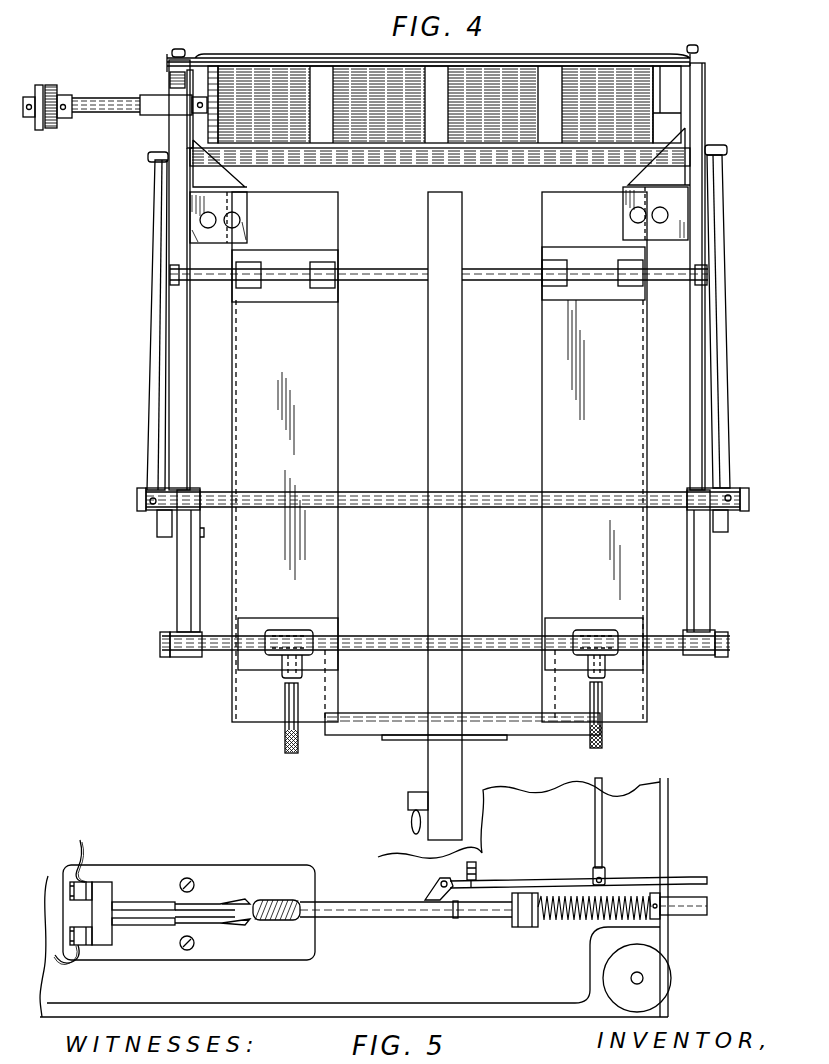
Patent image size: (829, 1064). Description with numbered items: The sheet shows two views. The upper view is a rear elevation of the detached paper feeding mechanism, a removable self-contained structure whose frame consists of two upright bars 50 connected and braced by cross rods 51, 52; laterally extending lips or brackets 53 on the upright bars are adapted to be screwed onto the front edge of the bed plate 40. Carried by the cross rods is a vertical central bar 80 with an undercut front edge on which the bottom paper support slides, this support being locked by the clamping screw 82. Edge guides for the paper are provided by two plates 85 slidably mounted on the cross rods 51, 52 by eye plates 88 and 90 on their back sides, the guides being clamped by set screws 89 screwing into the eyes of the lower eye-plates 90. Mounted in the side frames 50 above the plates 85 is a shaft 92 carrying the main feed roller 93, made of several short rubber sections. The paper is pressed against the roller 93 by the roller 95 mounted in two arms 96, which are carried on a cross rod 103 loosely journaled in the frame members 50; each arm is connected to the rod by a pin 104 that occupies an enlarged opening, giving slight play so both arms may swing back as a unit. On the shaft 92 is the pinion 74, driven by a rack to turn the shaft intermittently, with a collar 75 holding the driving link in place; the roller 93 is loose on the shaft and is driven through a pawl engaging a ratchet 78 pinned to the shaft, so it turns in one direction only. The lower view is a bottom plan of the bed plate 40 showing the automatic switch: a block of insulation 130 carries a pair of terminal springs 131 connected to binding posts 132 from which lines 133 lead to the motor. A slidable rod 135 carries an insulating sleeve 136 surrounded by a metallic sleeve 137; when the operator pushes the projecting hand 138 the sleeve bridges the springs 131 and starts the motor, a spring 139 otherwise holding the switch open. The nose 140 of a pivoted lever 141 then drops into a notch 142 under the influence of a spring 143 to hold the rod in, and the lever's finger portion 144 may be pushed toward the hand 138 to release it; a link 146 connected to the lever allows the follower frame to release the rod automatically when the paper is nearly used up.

In FIG. 5, the bed plate 40 is at (355, 897).
In FIG. 4, the upright bars 50 is at (197, 405).
In FIG. 4, the cross rod 51 is at (384, 268).
In FIG. 4, the cross rod 52 is at (380, 635).
In FIG. 4, the lips or brackets 53 is at (252, 204).
In FIG. 4, the pinion 74 is at (54, 118).
In FIG. 4, the collar 75 is at (40, 86).
In FIG. 4, the ratchet 78 is at (203, 122).
In FIG. 4, the vertical central bar 80 is at (445, 516).
In FIG. 4, the clamping screw 82 is at (414, 812).
In FIG. 4, the plates 85 is at (439, 457).
In FIG. 4, the eye plates 88 is at (305, 300).
In FIG. 4, the set screws 89 is at (286, 704).
In FIG. 4, the eye-plates 90 is at (305, 628).
In FIG. 4, the shaft 92 is at (120, 95).
In FIG. 4, the main feed roller 93 is at (444, 104).
In FIG. 4, the roller 95 is at (526, 168).
In FIG. 4, the arms 96 is at (156, 406).
In FIG. 4, the cross rod 103 is at (504, 507).
In FIG. 4, the pin 104 is at (153, 507).
In FIG. 5, the block of insulation 130 is at (189, 912).
In FIG. 5, the terminal springs 131 is at (222, 898).
In FIG. 5, the binding posts 132 is at (70, 890).
In FIG. 5, the lines 133 is at (88, 862).
In FIG. 5, the rod 135 is at (510, 920).
In FIG. 5, the insulating sleeve 136 is at (305, 902).
In FIG. 5, the metallic sleeve 137 is at (285, 898).
In FIG. 5, the projecting hand 138 is at (708, 904).
In FIG. 5, the spring 139 is at (590, 918).
In FIG. 5, the nose 140 is at (432, 896).
In FIG. 5, the pivoted lever 141 is at (556, 878).
In FIG. 5, the notch 142 is at (455, 919).
In FIG. 5, the spring 143 is at (478, 874).
In FIG. 5, the finger portion 144 is at (696, 869).
In FIG. 5, the link 146 is at (602, 828).